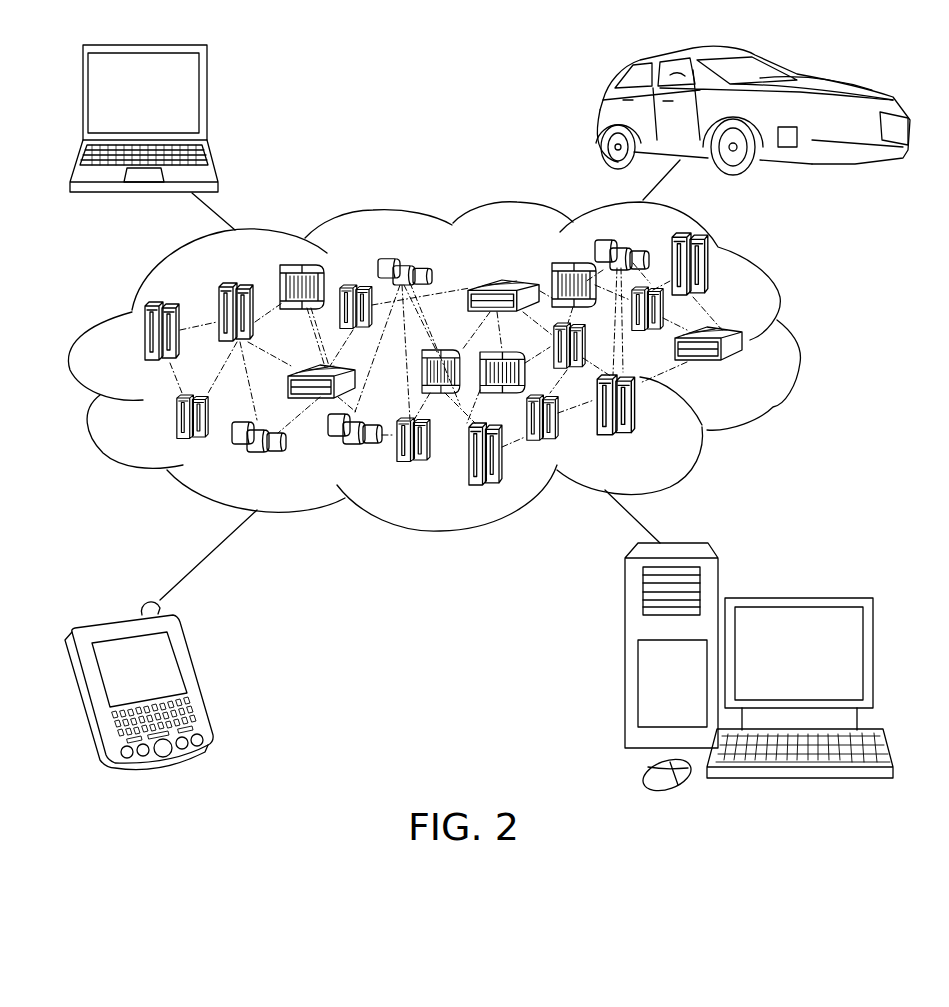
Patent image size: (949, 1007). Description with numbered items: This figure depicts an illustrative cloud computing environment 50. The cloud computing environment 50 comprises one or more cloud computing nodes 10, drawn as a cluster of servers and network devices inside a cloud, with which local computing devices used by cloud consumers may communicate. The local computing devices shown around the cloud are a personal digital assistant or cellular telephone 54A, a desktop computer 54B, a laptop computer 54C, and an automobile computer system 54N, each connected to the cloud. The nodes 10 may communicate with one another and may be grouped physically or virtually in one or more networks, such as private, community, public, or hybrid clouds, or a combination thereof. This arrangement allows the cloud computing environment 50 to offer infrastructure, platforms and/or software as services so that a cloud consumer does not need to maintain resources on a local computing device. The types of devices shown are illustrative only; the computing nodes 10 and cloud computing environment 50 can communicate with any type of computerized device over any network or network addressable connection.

The cloud computing node 10 is at (745, 368).
The cloud computing environment 50 is at (797, 340).
The personal digital assistant or cellular telephone 54A is at (197, 678).
The desktop computer 54B is at (798, 597).
The laptop computer 54C is at (207, 98).
The automobile computer system 54N is at (600, 112).